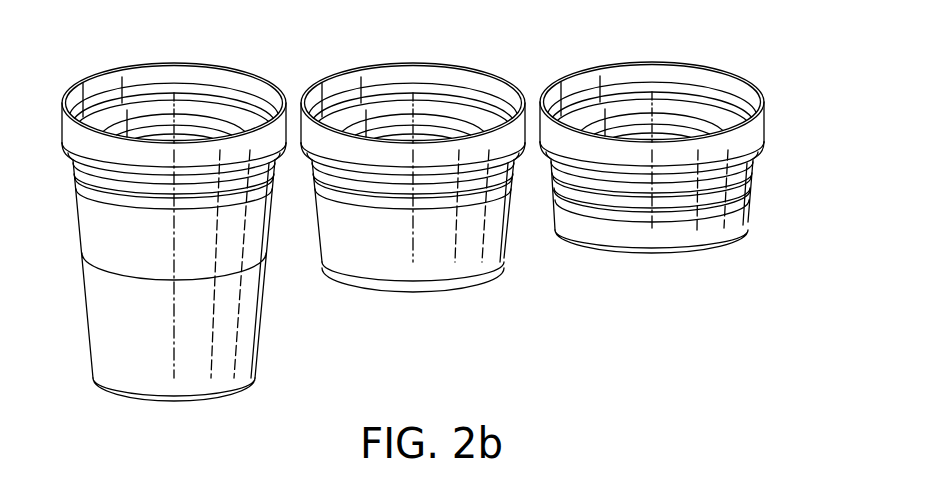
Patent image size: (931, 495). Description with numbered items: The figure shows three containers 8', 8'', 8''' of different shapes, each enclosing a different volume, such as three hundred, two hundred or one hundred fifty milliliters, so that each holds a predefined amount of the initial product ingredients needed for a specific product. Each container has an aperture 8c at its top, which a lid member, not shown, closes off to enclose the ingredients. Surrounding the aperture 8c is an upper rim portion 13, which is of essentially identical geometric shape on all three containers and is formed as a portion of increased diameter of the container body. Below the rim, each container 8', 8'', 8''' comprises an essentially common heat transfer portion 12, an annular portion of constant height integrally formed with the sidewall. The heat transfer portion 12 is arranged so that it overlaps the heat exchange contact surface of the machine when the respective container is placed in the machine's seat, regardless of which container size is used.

The container 8' is at (174, 260).
The container 8'' is at (413, 204).
The container 8''' is at (677, 165).
The aperture 8c is at (652, 84).
The upper rim portion 13 is at (677, 122).
The heat transfer portion 12 is at (100, 351).